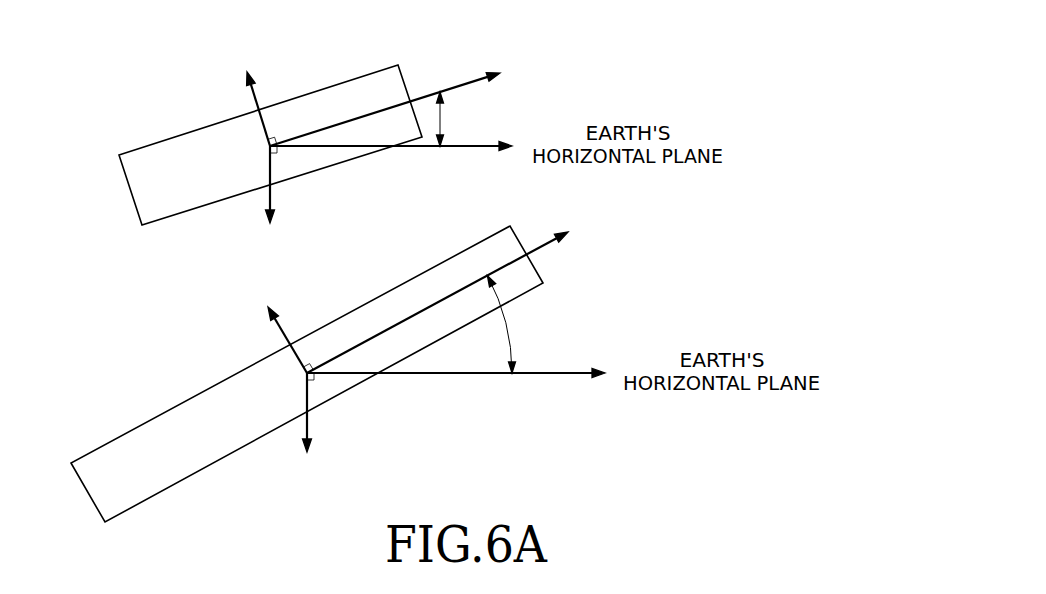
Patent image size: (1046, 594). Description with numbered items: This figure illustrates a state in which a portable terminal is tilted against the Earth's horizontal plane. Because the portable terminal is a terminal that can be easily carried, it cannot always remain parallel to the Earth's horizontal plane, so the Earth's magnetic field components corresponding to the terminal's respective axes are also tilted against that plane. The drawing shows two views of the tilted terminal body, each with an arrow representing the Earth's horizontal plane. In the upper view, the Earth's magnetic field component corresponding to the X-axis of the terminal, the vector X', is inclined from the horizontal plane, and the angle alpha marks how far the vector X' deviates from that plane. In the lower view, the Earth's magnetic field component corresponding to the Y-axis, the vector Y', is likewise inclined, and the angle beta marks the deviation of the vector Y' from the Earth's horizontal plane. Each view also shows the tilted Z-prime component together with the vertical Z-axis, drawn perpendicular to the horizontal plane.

The Earth's magnetic field component corresponding to the X-axis X' is at (399, 101).
The Earth's magnetic field component corresponding to the Y-axis Y' is at (452, 294).